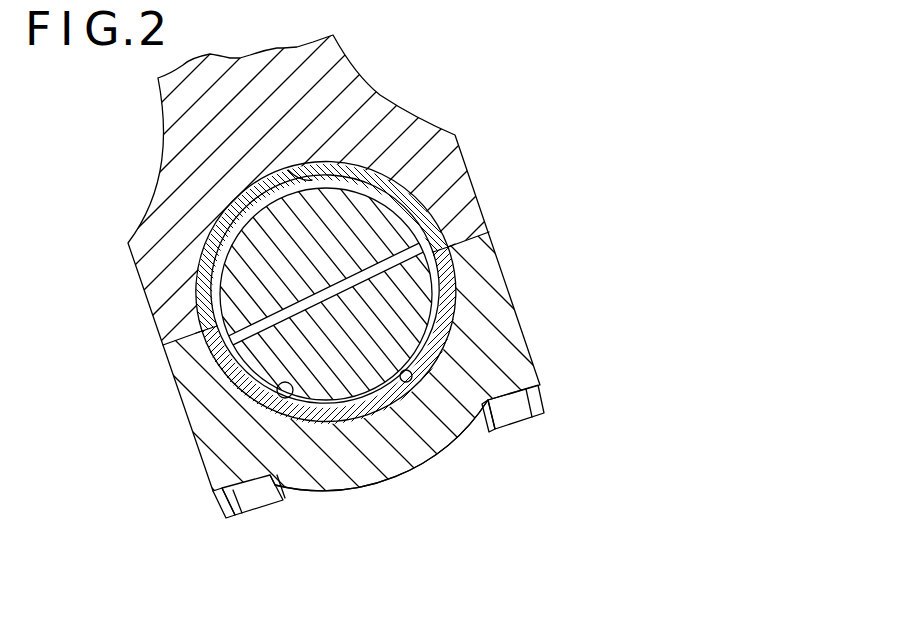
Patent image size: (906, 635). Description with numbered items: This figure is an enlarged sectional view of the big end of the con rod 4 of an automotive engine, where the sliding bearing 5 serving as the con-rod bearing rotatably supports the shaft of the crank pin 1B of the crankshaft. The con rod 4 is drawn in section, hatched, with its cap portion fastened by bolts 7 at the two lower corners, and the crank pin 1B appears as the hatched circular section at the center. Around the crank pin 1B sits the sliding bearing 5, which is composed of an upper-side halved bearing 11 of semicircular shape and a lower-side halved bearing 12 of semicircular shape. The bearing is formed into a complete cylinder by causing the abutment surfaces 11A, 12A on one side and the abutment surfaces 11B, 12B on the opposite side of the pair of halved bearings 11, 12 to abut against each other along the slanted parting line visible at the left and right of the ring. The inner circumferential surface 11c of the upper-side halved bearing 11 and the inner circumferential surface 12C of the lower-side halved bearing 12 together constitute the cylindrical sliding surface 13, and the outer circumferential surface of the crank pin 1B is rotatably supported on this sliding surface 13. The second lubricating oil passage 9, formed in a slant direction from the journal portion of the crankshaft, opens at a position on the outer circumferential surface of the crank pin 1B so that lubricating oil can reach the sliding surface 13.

The crank pin 1B is at (410, 298).
The con rod 4 is at (417, 117).
The sliding bearing 5 is at (430, 205).
The bolts 7 is at (520, 407).
The second lubricating oil passage 9 is at (317, 300).
The upper-side halved bearing 11 is at (350, 166).
The abutment surface 11A is at (448, 250).
The abutment surface 11B is at (204, 331).
The inner circumferential surface 11c is at (290, 170).
The lower-side halved bearing 12 is at (418, 395).
The abutment surface 12A is at (447, 247).
The abutment surface 12B is at (203, 329).
The inner circumferential surface 12C is at (412, 378).
The sliding surface 13 is at (279, 390).